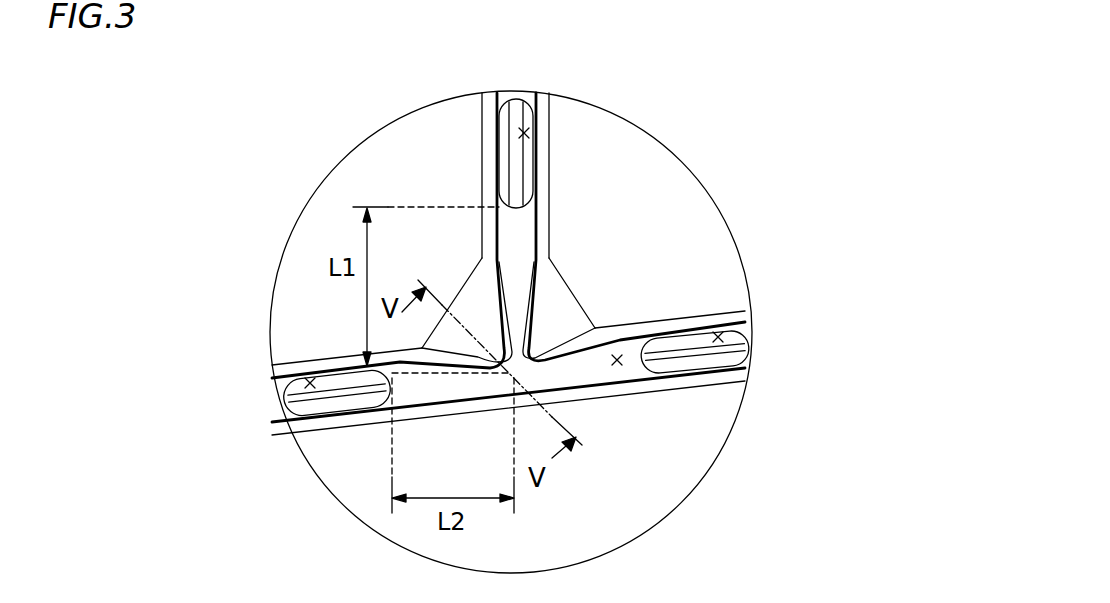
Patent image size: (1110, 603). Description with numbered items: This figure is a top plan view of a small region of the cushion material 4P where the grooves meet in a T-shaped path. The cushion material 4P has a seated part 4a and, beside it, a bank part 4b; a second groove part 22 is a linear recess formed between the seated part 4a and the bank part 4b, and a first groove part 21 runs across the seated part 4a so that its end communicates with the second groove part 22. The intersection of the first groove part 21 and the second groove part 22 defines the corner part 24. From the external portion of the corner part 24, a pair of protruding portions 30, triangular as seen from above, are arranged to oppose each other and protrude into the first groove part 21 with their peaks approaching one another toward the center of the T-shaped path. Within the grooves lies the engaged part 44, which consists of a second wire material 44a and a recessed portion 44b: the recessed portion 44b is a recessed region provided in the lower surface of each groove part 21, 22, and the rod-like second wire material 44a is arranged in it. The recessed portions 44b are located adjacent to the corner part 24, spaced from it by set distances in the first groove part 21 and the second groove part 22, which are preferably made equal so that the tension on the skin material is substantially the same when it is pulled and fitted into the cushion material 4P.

The cushion material 4P is at (698, 205).
The seated part 4a is at (470, 144).
The bank part 4b is at (540, 549).
The first groove part 21 is at (512, 235).
The second groove part 22 is at (618, 363).
The corner part 24 is at (492, 345).
The protruding portion 30 is at (472, 358).
The engaged part 44 is at (506, 238).
The second wire material 44a is at (519, 116).
The recessed portion 44b is at (528, 132).